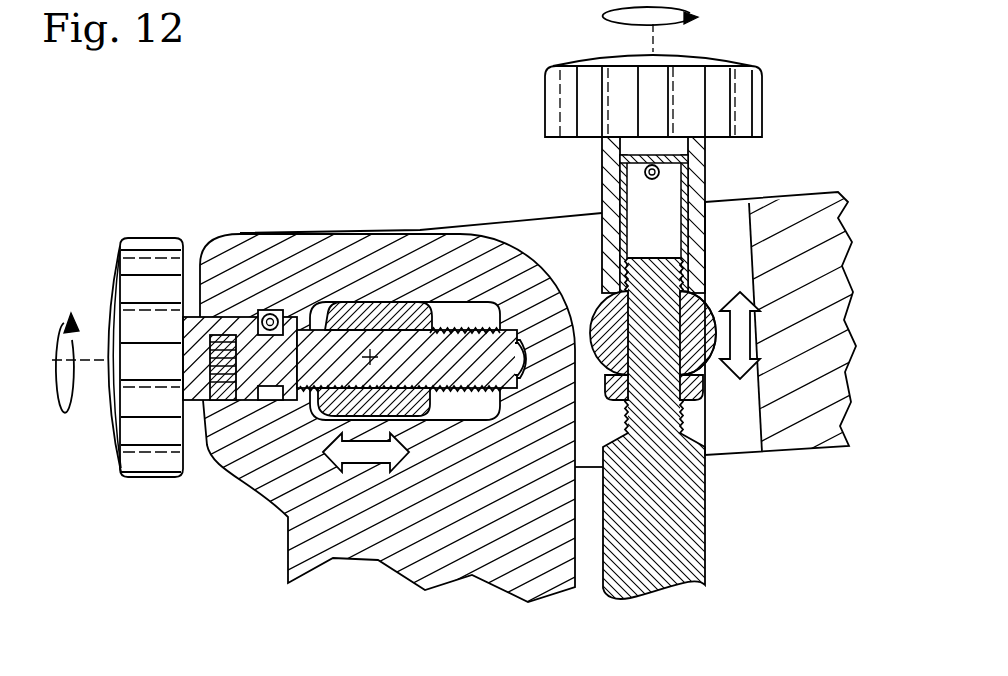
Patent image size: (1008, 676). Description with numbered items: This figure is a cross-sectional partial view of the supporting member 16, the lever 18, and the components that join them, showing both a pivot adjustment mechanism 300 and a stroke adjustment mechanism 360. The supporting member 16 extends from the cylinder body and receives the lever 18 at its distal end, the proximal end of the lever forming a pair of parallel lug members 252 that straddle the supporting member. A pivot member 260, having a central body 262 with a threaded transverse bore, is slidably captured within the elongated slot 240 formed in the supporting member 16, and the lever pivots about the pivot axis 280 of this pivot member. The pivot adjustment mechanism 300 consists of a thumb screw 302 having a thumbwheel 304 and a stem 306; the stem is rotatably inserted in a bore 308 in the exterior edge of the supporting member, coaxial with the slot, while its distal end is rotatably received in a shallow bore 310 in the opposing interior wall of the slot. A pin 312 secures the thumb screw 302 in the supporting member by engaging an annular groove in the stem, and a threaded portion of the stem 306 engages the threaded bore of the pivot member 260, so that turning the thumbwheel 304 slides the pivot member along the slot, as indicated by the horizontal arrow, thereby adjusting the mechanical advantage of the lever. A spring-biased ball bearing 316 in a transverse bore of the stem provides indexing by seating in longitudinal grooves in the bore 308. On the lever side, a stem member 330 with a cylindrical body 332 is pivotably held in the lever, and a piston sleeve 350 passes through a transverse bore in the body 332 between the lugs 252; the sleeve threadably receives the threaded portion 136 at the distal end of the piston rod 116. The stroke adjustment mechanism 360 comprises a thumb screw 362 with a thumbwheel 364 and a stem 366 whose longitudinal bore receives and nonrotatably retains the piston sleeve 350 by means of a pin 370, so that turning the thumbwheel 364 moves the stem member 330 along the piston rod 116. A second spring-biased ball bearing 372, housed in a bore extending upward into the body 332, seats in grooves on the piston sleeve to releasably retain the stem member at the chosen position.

The supporting member 16 is at (322, 236).
The lever 18 is at (806, 452).
The piston rod 116 is at (707, 538).
The threaded portion 136 is at (678, 407).
The elongated slot 240 is at (524, 300).
The lug members 252 is at (579, 212).
The pivot member 260 is at (427, 302).
The central body 262 is at (459, 328).
The pivot axis 280 is at (323, 303).
The pivot adjustment mechanism 300 is at (84, 444).
The thumb screw 302 is at (122, 482).
The thumbwheel 304 is at (150, 481).
The stem 306 is at (466, 304).
The bore 308 is at (212, 333).
The shallow bore 310 is at (503, 390).
The pin 312 is at (267, 313).
The spring-biased ball bearing 316 is at (228, 400).
The stem member 330 is at (710, 294).
The cylindrical body 332 is at (712, 300).
The piston sleeve 350 is at (704, 384).
The stroke adjustment mechanism 360 is at (724, 37).
The thumb screw 362 is at (753, 70).
The thumbwheel 364 is at (764, 105).
The stem 366 is at (603, 160).
The pin 370 is at (656, 180).
The spring-biased ball bearing 372 is at (474, 416).